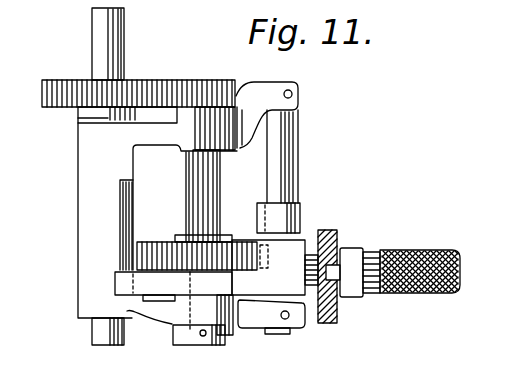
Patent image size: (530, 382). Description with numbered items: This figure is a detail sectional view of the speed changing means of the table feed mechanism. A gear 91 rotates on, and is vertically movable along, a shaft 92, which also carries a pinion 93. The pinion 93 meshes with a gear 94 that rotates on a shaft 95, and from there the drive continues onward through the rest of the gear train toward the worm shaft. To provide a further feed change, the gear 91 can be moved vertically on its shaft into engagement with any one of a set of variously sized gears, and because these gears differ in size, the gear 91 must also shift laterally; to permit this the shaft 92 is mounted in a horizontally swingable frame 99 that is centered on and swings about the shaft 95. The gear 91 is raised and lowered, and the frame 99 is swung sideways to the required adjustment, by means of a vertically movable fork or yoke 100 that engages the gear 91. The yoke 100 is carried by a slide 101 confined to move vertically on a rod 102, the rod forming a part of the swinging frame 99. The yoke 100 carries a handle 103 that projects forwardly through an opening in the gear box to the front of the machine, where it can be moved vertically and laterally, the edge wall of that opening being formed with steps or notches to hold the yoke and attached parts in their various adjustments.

The gear 91 is at (158, 244).
The shaft 92 is at (218, 186).
The pinion 93 is at (224, 76).
The gear 94 is at (145, 82).
The shaft 95 is at (122, 42).
The swingable frame 99 is at (80, 237).
The fork or yoke 100 is at (293, 288).
The slide 101 is at (302, 212).
The rod 102 is at (293, 165).
The handle 103 is at (445, 293).